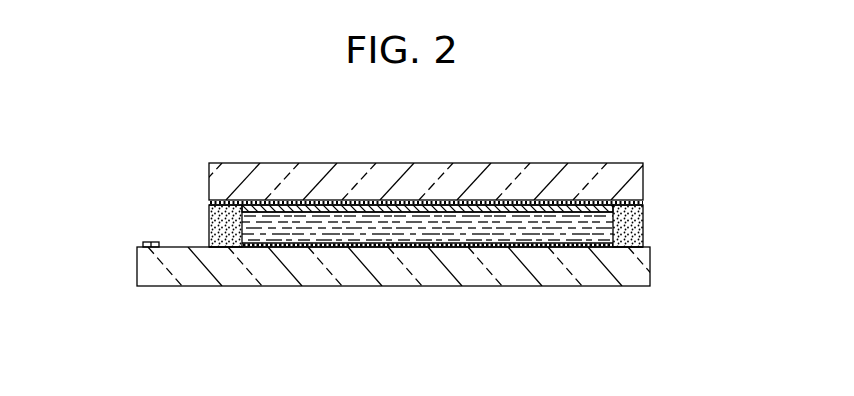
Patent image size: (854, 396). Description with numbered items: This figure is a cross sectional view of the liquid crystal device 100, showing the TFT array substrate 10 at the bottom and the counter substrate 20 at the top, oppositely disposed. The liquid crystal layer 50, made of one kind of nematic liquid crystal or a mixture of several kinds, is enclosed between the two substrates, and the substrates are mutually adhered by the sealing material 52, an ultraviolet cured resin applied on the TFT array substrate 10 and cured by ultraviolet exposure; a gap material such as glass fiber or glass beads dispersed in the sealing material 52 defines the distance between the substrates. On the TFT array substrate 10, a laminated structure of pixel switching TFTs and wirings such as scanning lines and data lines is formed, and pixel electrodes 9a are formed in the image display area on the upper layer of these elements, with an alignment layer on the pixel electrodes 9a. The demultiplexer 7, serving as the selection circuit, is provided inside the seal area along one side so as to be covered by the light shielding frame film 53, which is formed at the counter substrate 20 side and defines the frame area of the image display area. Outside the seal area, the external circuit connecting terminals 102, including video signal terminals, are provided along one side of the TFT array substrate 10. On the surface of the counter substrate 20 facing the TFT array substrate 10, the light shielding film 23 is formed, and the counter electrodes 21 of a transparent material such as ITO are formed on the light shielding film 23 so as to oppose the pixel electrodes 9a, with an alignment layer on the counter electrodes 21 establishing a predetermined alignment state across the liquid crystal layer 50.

The liquid crystal device 100 is at (642, 128).
The counter substrate 20 is at (357, 172).
The TFT array substrate 10 is at (450, 287).
The external circuit connecting terminals 102 is at (144, 243).
The sealing material 52 is at (212, 220).
The light shielding frame film 53 is at (241, 203).
The light shielding film 23 is at (415, 205).
The counter electrodes 21 is at (544, 212).
The liquid crystal layer 50 is at (377, 232).
The pixel electrodes 9a is at (278, 247).
The demultiplexer 7 is at (244, 247).